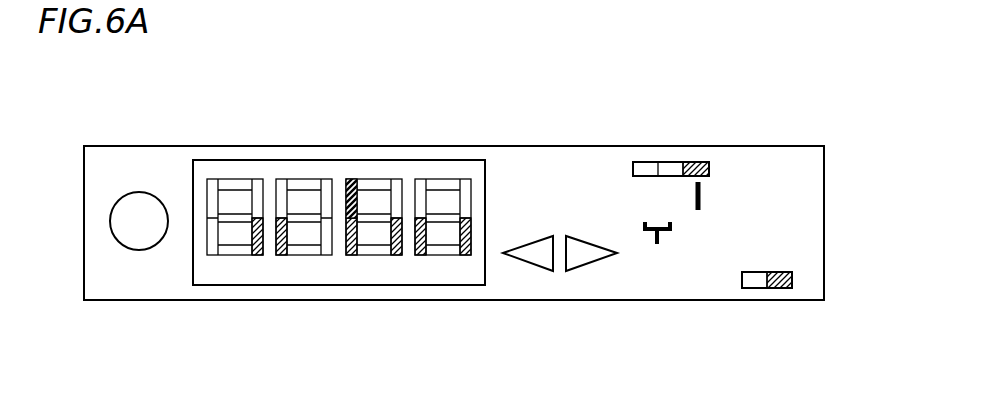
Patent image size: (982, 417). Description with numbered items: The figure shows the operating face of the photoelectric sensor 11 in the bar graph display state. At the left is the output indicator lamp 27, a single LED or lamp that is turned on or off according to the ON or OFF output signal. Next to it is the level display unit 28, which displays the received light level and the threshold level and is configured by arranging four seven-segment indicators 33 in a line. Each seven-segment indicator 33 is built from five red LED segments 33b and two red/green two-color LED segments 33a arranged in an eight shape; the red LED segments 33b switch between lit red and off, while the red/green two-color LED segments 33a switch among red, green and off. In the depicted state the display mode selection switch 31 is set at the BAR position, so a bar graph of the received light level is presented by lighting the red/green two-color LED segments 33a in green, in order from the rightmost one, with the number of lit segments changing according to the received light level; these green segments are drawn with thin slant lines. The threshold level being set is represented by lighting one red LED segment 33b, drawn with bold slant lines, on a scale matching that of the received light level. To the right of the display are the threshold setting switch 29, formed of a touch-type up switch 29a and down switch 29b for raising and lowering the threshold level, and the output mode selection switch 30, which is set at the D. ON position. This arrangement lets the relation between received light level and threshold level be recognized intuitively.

The photoelectric sensor 11 is at (875, 72).
The output indicator lamp 27 is at (139, 208).
The level display unit 28 is at (400, 170).
The threshold setting switch 29 is at (560, 273).
The up switch 29a is at (540, 256).
The down switch 29b is at (580, 256).
The output mode selection switch 30 is at (778, 289).
The display mode selection switch 31 is at (693, 162).
The 7-segment indicator 33 is at (443, 178).
The red/green two-color LED segment 33a is at (258, 256).
The red LED segment 33b is at (350, 178).